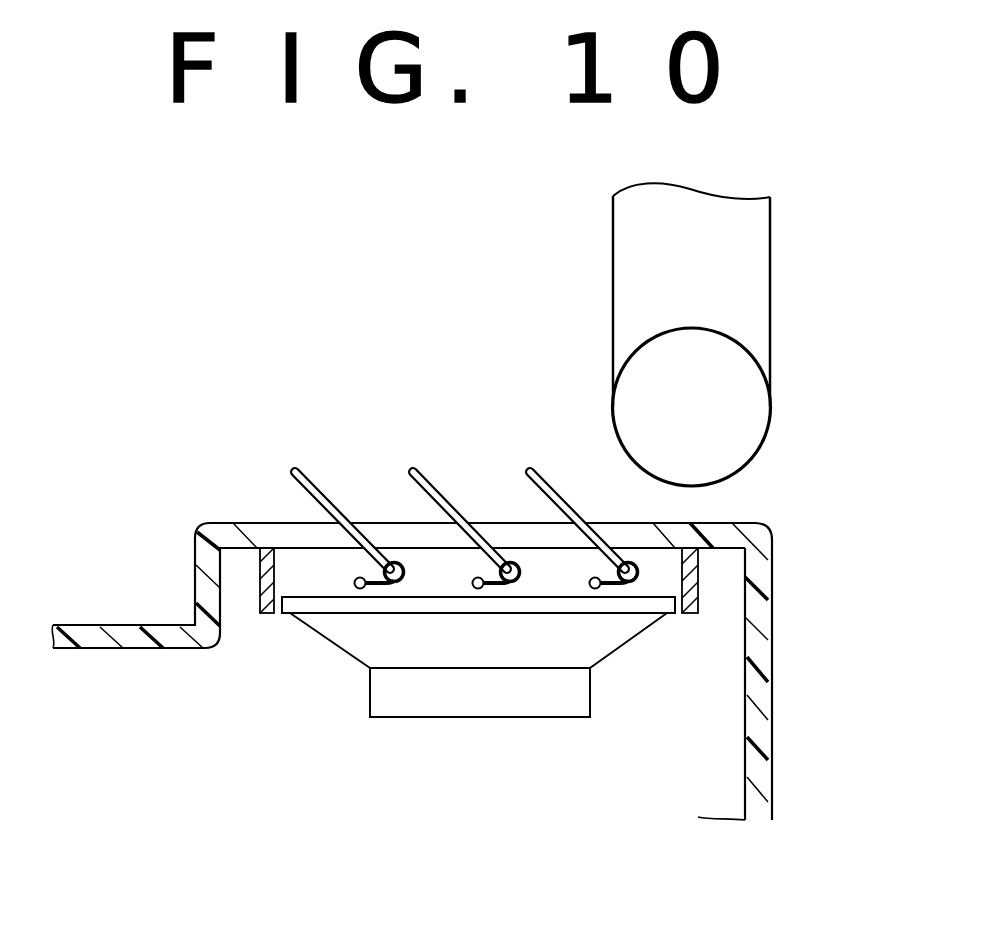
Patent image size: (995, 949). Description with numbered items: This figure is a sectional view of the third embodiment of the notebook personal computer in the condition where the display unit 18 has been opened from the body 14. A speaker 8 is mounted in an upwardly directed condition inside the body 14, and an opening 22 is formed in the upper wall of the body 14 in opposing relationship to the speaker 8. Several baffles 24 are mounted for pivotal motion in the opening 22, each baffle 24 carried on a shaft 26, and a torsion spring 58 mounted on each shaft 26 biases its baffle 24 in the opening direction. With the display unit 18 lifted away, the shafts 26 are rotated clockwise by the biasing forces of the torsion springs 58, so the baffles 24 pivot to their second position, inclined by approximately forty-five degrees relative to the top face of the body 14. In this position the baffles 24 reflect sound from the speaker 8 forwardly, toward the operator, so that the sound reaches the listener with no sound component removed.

The speaker 8 is at (450, 710).
The body 14 is at (768, 660).
The display unit 18 is at (765, 302).
The opening 22 is at (300, 548).
The baffle 24 is at (308, 482).
The shaft 26 is at (407, 577).
The torsion spring 58 is at (377, 586).